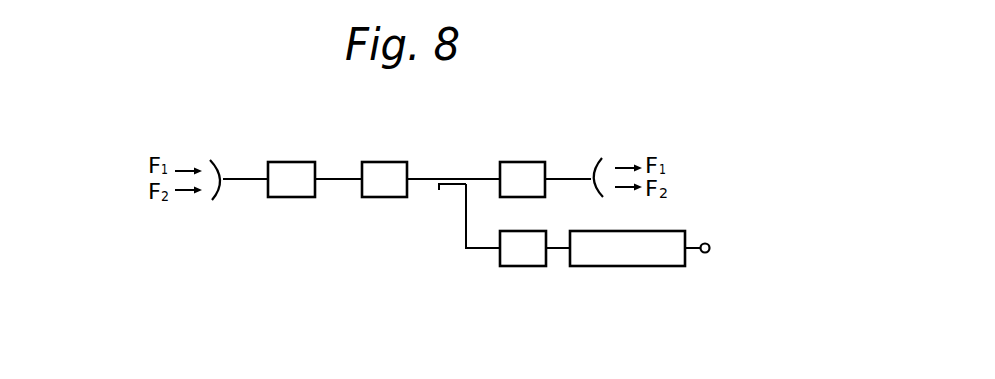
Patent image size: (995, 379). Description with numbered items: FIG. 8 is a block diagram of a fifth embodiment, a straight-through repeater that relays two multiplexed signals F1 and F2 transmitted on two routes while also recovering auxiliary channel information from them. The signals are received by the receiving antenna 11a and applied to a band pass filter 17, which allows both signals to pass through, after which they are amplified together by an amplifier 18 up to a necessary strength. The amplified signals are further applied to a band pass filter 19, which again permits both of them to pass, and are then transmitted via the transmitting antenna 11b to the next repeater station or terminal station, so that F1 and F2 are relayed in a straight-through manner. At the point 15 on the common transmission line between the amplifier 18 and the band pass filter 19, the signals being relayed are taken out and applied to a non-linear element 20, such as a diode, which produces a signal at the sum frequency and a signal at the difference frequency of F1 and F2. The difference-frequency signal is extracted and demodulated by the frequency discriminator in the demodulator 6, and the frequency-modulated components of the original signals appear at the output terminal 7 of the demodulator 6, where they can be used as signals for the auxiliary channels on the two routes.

The receiving antenna 11a is at (212, 200).
The band pass filter 17 is at (290, 197).
The amplifier 18 is at (385, 197).
The branch point 15 is at (455, 179).
The band pass filter 19 is at (532, 162).
The transmitting antenna 11b is at (599, 159).
The non-linear element 20 is at (519, 266).
The demodulator 6 is at (645, 266).
The output terminal 7 is at (715, 247).